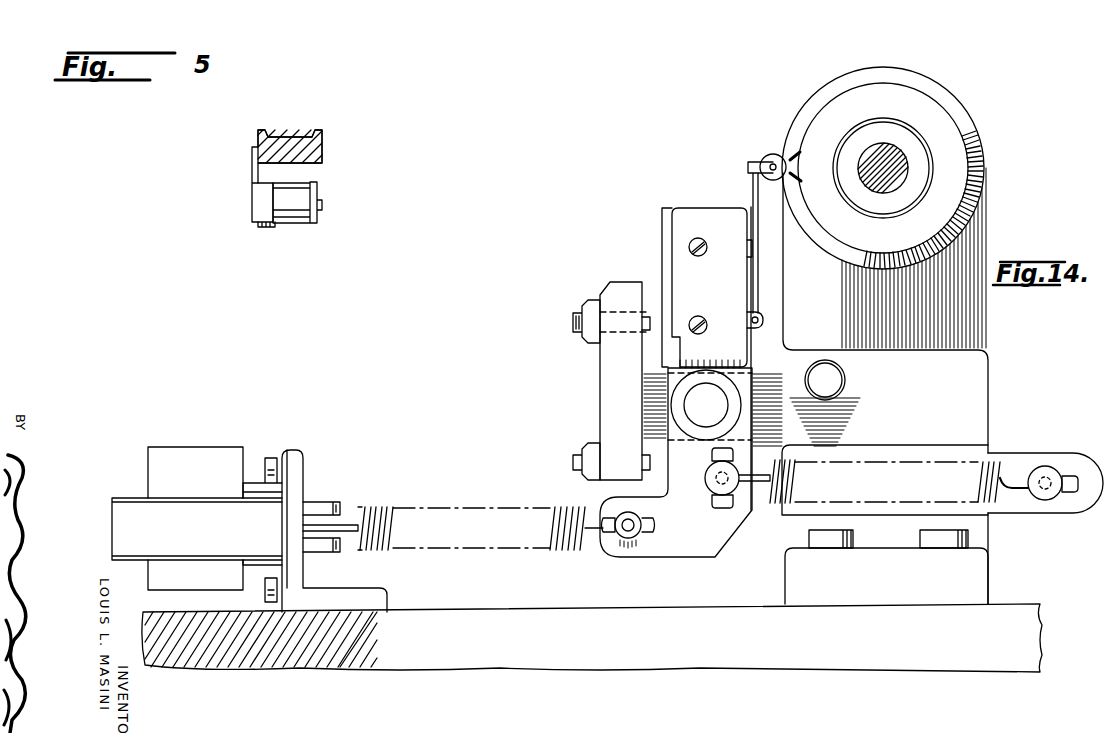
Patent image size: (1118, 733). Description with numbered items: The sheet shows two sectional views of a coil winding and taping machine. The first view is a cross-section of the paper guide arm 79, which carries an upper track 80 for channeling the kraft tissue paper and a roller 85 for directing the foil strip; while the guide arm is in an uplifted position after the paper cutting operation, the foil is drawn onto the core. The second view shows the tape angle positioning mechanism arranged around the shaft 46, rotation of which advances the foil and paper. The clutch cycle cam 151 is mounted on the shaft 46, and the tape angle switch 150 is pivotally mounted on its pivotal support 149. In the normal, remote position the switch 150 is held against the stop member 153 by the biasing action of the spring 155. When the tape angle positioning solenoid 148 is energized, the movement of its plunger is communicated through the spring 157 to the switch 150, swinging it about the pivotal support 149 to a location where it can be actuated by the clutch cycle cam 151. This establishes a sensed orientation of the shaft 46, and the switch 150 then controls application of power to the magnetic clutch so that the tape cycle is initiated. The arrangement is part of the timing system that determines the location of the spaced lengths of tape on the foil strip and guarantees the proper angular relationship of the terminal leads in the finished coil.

In FIG. 5, the paper guide arm 79 is at (241, 175).
In FIG. 5, the upper track 80 is at (288, 136).
In FIG. 5, the roller 85 is at (270, 227).
In FIG. 14, the shaft 46 is at (902, 166).
In FIG. 14, the tape angle positioning solenoid 148 is at (183, 447).
In FIG. 14, the pivotal support 149 is at (702, 392).
In FIG. 14, the tape angle switch 150 is at (708, 208).
In FIG. 14, the clutch cycle cam 151 is at (857, 103).
In FIG. 14, the stop member 153 is at (613, 287).
In FIG. 14, the spring 155 is at (997, 460).
In FIG. 14, the spring 157 is at (431, 505).